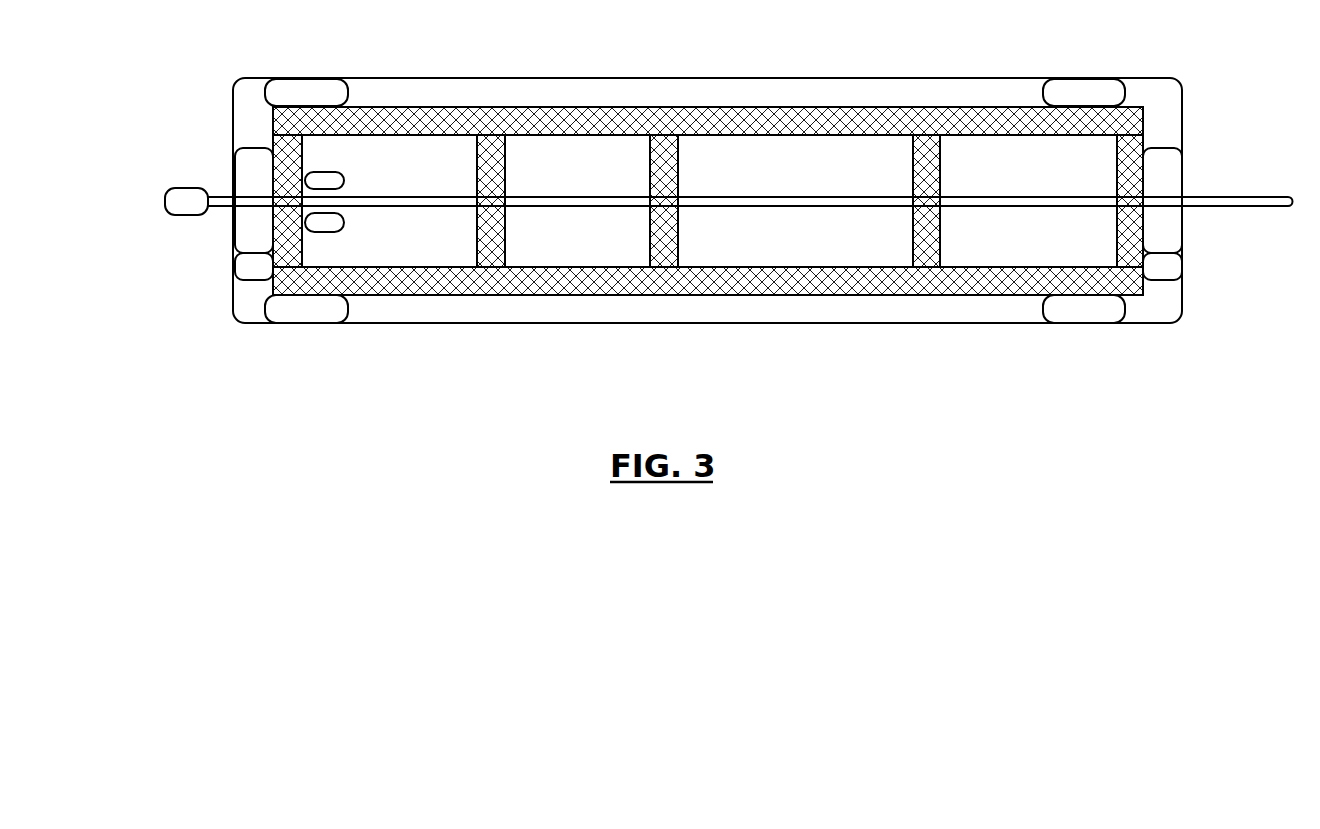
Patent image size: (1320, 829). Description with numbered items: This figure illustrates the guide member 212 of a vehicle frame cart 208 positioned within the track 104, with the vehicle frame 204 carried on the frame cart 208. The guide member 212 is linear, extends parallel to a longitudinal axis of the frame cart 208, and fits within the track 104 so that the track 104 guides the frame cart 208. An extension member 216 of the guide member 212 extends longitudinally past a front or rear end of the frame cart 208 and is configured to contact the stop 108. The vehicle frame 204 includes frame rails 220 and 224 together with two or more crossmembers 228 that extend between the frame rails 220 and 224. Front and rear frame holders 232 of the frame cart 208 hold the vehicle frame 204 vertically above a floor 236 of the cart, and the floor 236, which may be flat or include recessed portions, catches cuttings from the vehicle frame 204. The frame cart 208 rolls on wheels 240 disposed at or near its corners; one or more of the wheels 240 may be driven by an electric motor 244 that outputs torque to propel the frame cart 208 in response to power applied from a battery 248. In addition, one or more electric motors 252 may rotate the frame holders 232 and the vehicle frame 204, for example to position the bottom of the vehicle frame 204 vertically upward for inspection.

The track 104 is at (693, 144).
The stop 108 is at (165, 208).
The vehicle frame 204 is at (708, 233).
The vehicle frame cart 208 is at (1182, 82).
The guide member 212 is at (710, 194).
The extension member 216 is at (208, 195).
The frame rail 220 is at (548, 125).
The frame rail 224 is at (565, 290).
The crossmembers 228 is at (288, 155).
The frame holders 232 is at (233, 227).
The floor 236 is at (782, 232).
The wheels 240 is at (349, 80).
The electric motor 244 is at (327, 230).
The battery 248 is at (342, 185).
The electric motors 252 is at (255, 265).